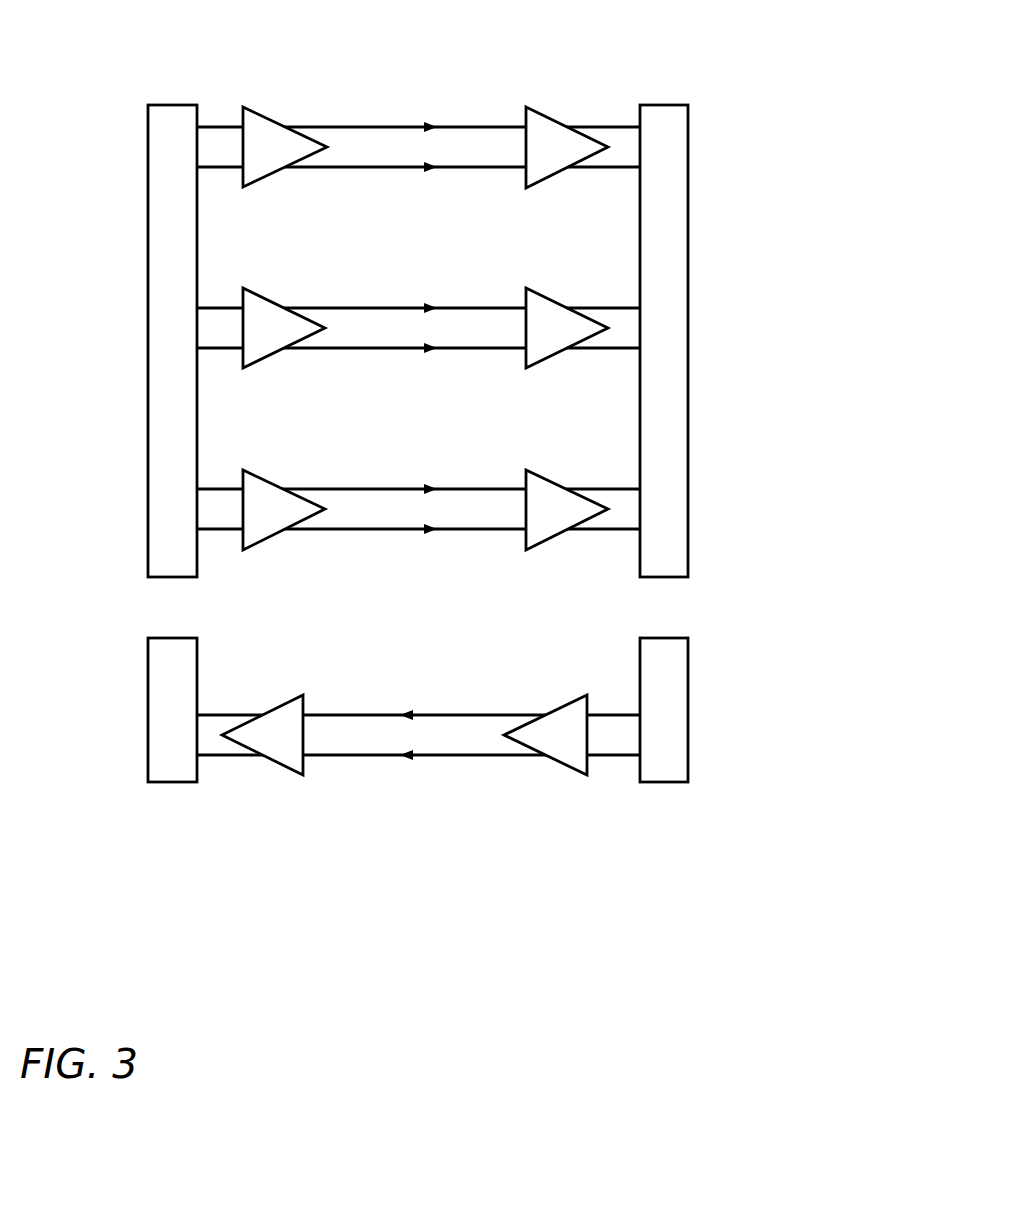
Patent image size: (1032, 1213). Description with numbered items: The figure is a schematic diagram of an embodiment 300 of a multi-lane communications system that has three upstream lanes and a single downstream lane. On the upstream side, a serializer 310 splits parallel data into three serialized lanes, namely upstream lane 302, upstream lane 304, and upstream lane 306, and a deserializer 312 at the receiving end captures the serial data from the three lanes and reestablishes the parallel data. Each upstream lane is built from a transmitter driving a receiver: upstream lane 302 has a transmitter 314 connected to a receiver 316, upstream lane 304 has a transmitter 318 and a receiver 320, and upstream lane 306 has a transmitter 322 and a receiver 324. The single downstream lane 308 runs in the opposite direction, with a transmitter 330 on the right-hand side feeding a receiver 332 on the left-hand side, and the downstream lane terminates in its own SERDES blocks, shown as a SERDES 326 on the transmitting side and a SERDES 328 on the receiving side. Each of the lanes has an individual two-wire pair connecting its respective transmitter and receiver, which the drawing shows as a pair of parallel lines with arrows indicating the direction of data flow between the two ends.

The embodiment 300 is at (676, 943).
The upstream lane 302 is at (815, 193).
The upstream lane 304 is at (815, 363).
The upstream lane 306 is at (815, 544).
The downstream lane 308 is at (815, 750).
The serializer 310 is at (178, 104).
The deserializer 312 is at (675, 104).
The transmitter 314 is at (265, 108).
The receiver 316 is at (548, 107).
The transmitter 318 is at (264, 289).
The receiver 320 is at (548, 288).
The transmitter 322 is at (264, 470).
The receiver 324 is at (548, 470).
The SERDES 326 is at (668, 783).
The SERDES 328 is at (172, 783).
The transmitter 330 is at (574, 696).
The receiver 332 is at (290, 696).